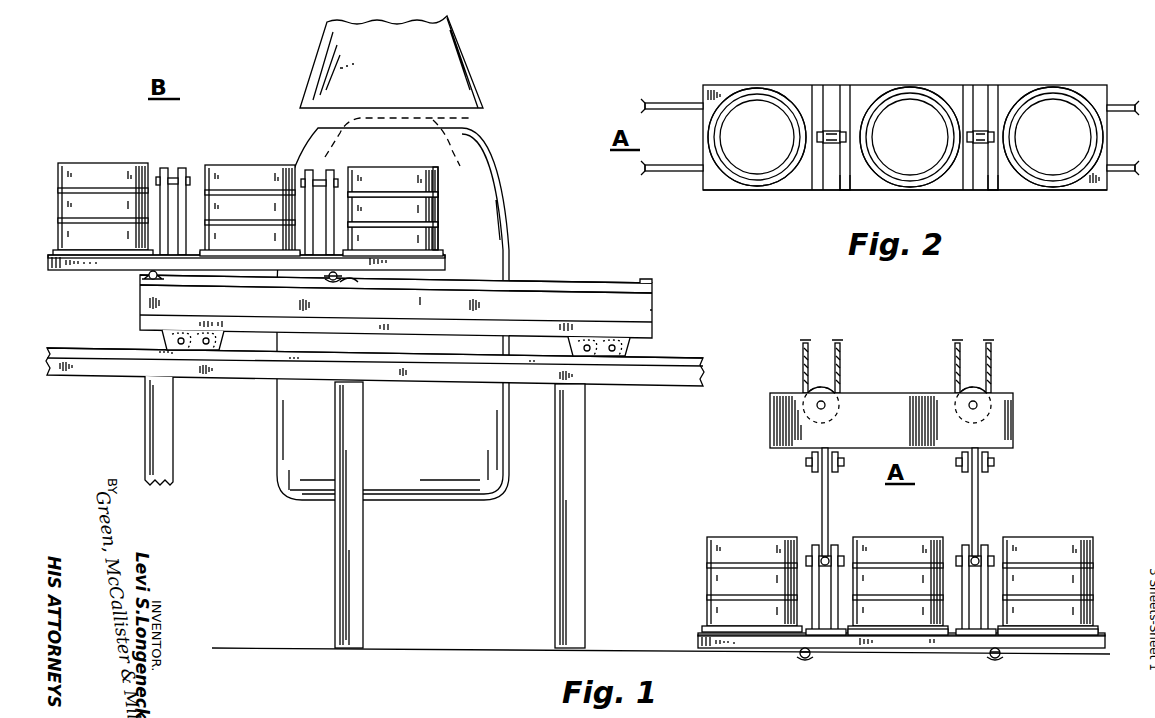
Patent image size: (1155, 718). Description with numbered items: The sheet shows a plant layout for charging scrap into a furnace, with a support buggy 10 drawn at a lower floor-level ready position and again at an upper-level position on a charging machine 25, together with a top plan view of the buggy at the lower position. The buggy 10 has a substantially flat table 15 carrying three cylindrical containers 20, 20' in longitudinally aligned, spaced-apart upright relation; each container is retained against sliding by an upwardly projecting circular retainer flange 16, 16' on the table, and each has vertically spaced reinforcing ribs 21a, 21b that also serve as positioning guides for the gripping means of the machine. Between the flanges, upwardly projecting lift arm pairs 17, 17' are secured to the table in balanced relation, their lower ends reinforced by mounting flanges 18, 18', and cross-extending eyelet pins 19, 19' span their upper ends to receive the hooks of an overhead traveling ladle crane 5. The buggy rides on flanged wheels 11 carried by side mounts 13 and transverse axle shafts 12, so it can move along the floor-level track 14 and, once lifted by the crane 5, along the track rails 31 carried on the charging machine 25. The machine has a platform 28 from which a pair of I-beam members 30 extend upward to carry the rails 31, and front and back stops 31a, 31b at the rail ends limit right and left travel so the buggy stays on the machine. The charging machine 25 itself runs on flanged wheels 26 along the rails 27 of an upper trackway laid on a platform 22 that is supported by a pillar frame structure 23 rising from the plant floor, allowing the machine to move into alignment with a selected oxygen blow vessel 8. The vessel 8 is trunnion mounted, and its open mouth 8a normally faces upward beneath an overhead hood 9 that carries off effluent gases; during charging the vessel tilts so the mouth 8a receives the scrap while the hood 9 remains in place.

In FIG. 1, the overhead traveling ladle crane 5 is at (878, 430).
In FIG. 1, the oxygen blow vessel 8 is at (436, 474).
In FIG. 1, the open mouth 8a is at (472, 120).
In FIG. 1, the overhead hood 9 is at (398, 71).
In FIG. 1, the support buggy 10 is at (88, 276).
In FIG. 2, the support buggy 10 is at (700, 192).
In FIG. 1, the flanged wheels 11 is at (342, 288).
In FIG. 1, the transverse axle shafts 12 is at (331, 290).
In FIG. 1, the side mounts 13 is at (353, 286).
In FIG. 1, the floor level track 14 is at (630, 648).
In FIG. 2, the floor level track 14 is at (687, 162).
In FIG. 1, the table 15 is at (436, 257).
In FIG. 2, the table 15 is at (736, 190).
In FIG. 1, the retainer flange 16 is at (732, 442).
In FIG. 2, the retainer flange 16 is at (1053, 124).
In FIG. 1, the retainer flange 16' is at (574, 442).
In FIG. 2, the retainer flange 16' is at (910, 123).
In FIG. 1, the lift arm pair 17 is at (656, 388).
In FIG. 2, the lift arm pair 17 is at (985, 123).
In FIG. 1, the lift arm pair 17' is at (510, 383).
In FIG. 2, the lift arm pair 17' is at (808, 121).
In FIG. 1, the mounting flange 18 is at (966, 655).
In FIG. 2, the mounting flange 18 is at (1001, 196).
In FIG. 1, the mounting flange 18' is at (833, 655).
In FIG. 2, the mounting flange 18' is at (856, 195).
In FIG. 1, the eyelet pin 19 is at (620, 380).
In FIG. 2, the eyelet pin 19 is at (953, 125).
In FIG. 1, the eyelet pin 19' is at (485, 383).
In FIG. 2, the eyelet pin 19' is at (842, 124).
In FIG. 1, the container 20 is at (720, 382).
In FIG. 2, the container 20 is at (1053, 137).
In FIG. 1, the container 20' is at (574, 382).
In FIG. 2, the container 20' is at (910, 137).
In FIG. 1, the rib 21a is at (436, 194).
In FIG. 1, the rib 21b is at (436, 224).
In FIG. 1, the platform 22 is at (112, 370).
In FIG. 1, the pillar frame structure 23 is at (174, 458).
In FIG. 1, the charging machine 25 is at (656, 328).
In FIG. 1, the flanged wheels 26 is at (224, 352).
In FIG. 1, the upper trackway rails 27 is at (84, 347).
In FIG. 1, the platform 28 is at (558, 320).
In FIG. 1, the I-beam members 30 is at (141, 302).
In FIG. 1, the track rails 31 is at (612, 286).
In FIG. 1, the front stop 31a is at (652, 282).
In FIG. 1, the back stop 31b is at (145, 282).